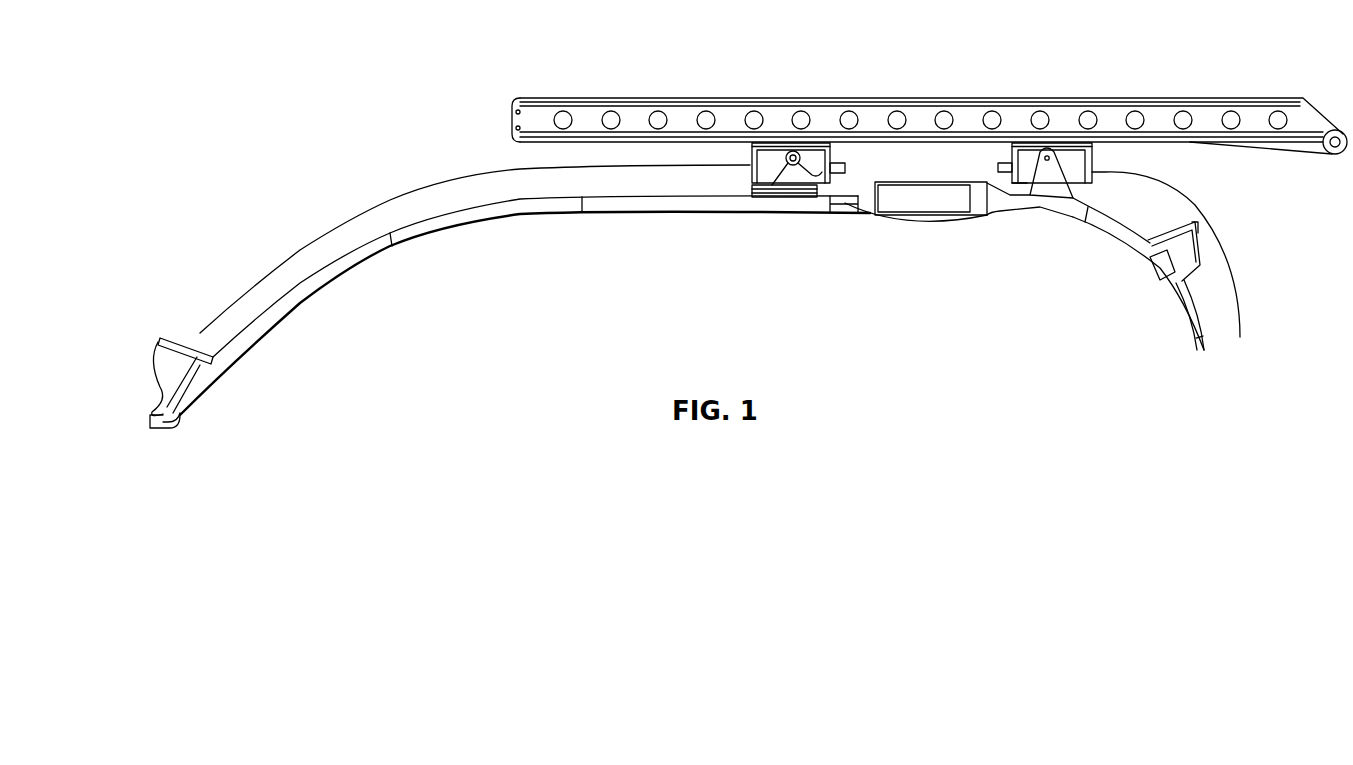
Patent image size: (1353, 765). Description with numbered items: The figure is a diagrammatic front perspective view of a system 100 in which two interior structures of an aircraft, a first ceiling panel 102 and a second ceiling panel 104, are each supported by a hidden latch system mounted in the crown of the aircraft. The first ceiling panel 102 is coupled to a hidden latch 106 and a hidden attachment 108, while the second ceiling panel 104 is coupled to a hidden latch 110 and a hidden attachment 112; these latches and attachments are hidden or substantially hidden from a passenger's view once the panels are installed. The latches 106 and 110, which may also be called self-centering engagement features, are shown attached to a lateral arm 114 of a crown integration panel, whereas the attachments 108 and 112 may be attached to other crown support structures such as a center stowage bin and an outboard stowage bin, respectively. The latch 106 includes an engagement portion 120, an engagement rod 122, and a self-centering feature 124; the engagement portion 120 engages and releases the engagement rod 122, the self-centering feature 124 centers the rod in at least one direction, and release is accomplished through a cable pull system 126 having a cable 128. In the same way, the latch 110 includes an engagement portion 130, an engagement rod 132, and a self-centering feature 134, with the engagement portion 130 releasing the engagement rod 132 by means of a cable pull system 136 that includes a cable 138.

The system 100 is at (363, 130).
The first ceiling panel 102 is at (482, 222).
The second ceiling panel 104 is at (1125, 245).
The hidden latch 106 is at (772, 214).
The hidden attachment 108 is at (153, 352).
The hidden latch 110 is at (1037, 208).
The hidden attachment 112 is at (1192, 258).
The lateral arm 114 is at (565, 99).
The engagement portion 120 is at (836, 152).
The engagement rod 122 is at (793, 165).
The self-centering feature 124 is at (808, 150).
The cable pull system 126 is at (712, 153).
The cable 128 is at (728, 172).
The engagement portion 130 is at (1006, 153).
The engagement rod 132 is at (1045, 152).
The self-centering feature 134 is at (1082, 152).
The cable pull system 136 is at (1104, 156).
The cable 138 is at (1105, 172).